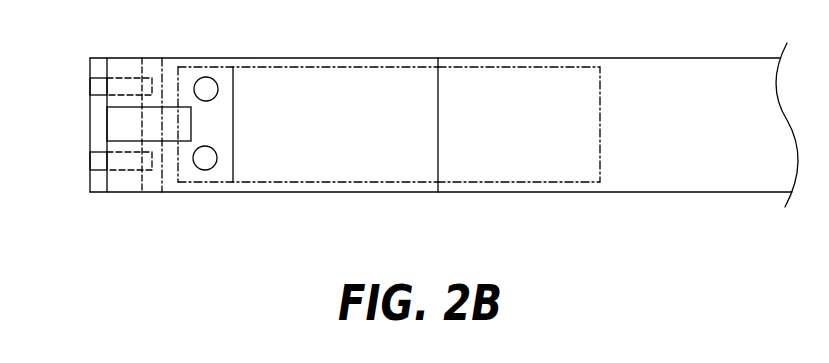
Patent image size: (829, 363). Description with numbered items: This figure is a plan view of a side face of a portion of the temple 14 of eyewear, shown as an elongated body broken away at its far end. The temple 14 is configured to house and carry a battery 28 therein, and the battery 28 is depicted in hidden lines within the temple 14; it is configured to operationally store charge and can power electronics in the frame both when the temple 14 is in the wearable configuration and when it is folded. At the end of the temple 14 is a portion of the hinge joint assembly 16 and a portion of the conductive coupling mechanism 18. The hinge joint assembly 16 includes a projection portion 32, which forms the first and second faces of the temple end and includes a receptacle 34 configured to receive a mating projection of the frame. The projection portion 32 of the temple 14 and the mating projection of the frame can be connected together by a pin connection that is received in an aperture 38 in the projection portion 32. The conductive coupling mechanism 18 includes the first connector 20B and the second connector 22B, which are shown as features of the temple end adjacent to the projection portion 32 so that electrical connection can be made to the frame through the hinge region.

The temple 14 is at (645, 57).
The hinge joint assembly 16 is at (109, 46).
The conductive coupling mechanism 18 is at (208, 194).
The first connector 20B is at (97, 85).
The second connector 22B is at (205, 158).
The battery 28 is at (522, 165).
The projection portion 32 is at (318, 194).
The receptacle 34 is at (132, 127).
The aperture 38 is at (155, 57).